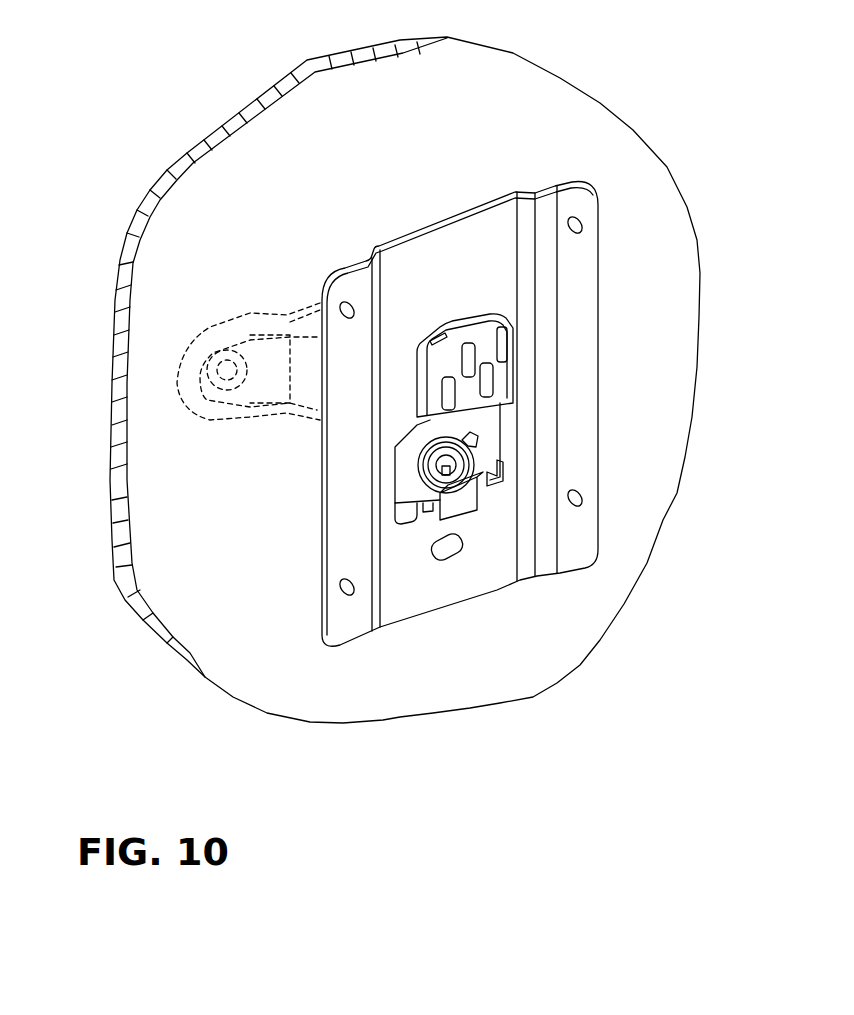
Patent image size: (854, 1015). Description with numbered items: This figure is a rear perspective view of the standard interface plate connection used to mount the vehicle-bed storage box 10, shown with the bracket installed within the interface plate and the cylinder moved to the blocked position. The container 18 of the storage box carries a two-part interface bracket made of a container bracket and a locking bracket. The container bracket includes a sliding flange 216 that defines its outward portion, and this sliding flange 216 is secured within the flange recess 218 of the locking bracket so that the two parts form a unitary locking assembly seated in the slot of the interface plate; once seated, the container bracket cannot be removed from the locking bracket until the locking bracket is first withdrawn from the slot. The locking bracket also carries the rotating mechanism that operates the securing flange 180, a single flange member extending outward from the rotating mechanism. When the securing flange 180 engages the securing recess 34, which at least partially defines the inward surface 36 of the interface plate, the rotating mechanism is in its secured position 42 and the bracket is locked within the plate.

The vehicle-bed storage box 10 is at (200, 78).
The container 18 is at (197, 195).
The securing recess 34 is at (451, 615).
The inward surface 36 is at (412, 582).
The secured position 42 is at (610, 440).
The securing flange 180 is at (564, 568).
The sliding flange 216 is at (517, 196).
The flange recess 218 is at (574, 232).